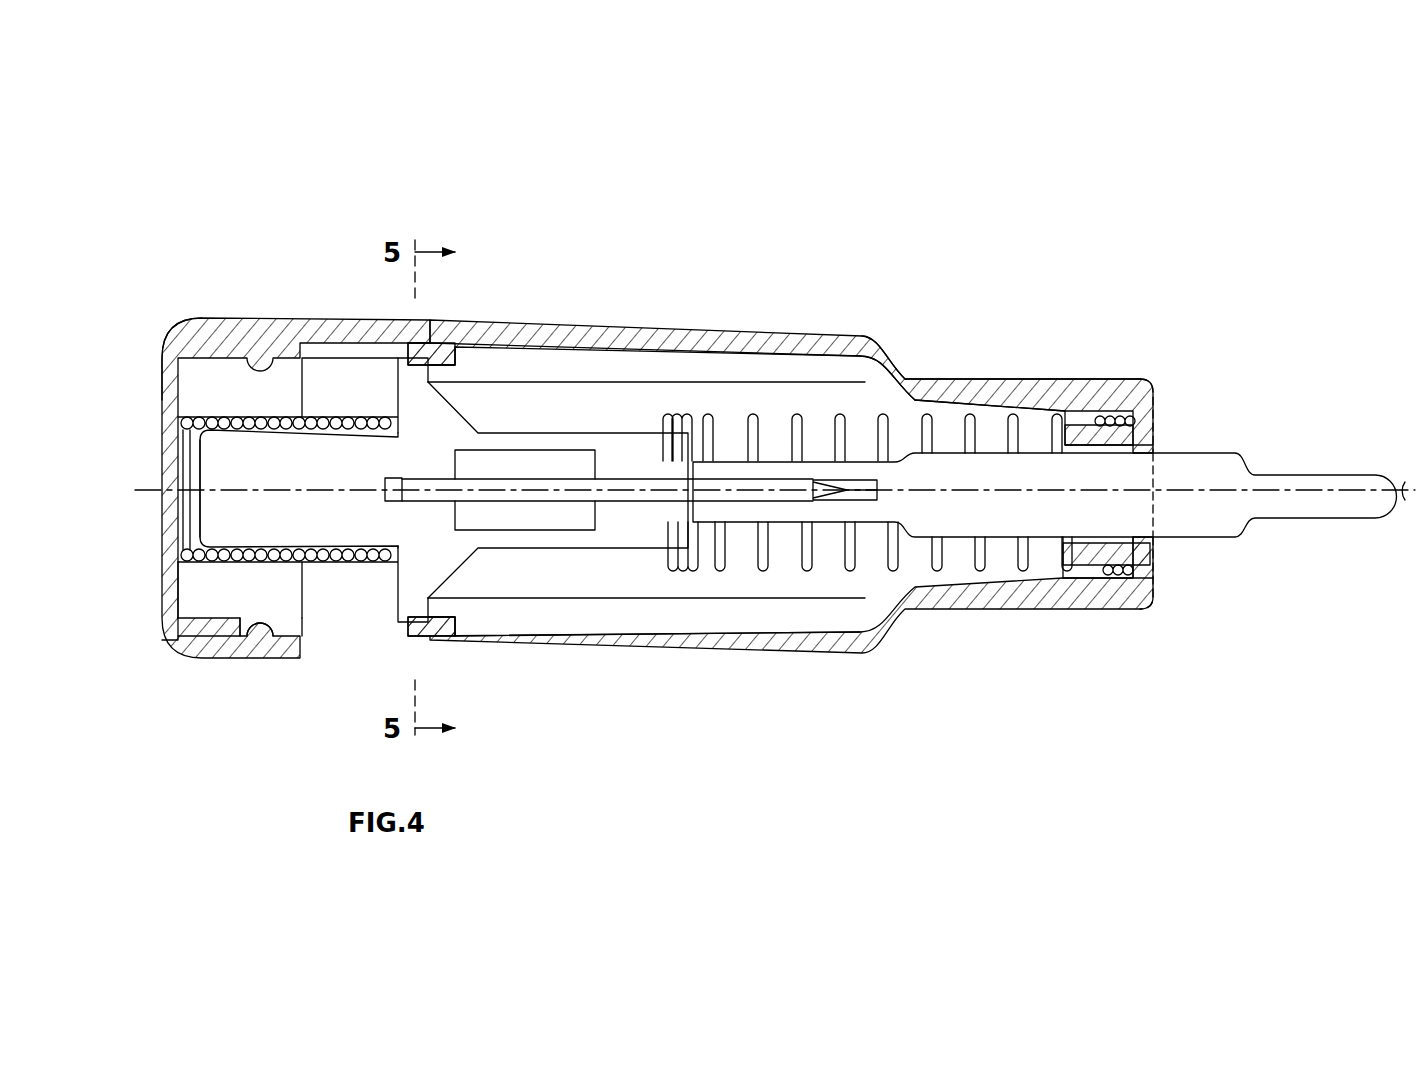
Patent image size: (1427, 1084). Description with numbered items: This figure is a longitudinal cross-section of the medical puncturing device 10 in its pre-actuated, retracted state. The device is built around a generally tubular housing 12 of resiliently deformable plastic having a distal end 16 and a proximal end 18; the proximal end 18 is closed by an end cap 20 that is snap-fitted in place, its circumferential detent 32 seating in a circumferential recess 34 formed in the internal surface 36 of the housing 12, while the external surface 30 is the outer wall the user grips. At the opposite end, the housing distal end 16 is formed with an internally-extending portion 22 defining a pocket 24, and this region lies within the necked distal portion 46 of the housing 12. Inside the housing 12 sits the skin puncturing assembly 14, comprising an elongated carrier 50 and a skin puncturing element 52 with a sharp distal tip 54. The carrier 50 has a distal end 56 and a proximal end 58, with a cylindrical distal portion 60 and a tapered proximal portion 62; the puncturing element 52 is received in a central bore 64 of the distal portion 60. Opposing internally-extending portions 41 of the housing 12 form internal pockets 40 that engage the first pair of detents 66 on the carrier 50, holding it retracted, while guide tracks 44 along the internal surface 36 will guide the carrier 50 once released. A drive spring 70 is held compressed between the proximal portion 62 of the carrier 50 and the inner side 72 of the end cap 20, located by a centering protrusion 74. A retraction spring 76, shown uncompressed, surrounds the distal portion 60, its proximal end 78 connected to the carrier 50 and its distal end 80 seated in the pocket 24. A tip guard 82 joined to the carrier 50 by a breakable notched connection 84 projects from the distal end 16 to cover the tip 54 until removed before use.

The medical puncturing device 10 is at (223, 267).
The housing 12 is at (730, 325).
The skin puncturing assembly 14 is at (638, 390).
The distal end 16 is at (1160, 378).
The proximal end 18 is at (237, 317).
The end cap 20 is at (178, 338).
The internally-extending portion 22 is at (1092, 550).
The pocket 24 is at (1072, 413).
The external surface 30 is at (850, 330).
The circumferential detent 32 is at (278, 630).
The circumferential recess 34 is at (250, 628).
The internal surface 36 is at (347, 350).
The internal pockets 40 is at (420, 333).
The internally-extending portions 41 is at (527, 333).
The guide tracks 44 is at (777, 367).
The distal portion 46 is at (947, 372).
The carrier member 50 is at (547, 433).
The skin puncturing element 52 is at (630, 493).
The sharp distal tip 54 is at (847, 495).
The distal end 56 is at (693, 440).
The proximal end 58 is at (213, 460).
The distal portion 60 is at (633, 445).
The proximal portion 62 is at (289, 489).
The central bore 64 is at (392, 483).
The first pair of detents 66 is at (407, 384).
The drive spring 70 is at (178, 567).
The inner side 72 is at (177, 613).
The centering protrusion 74 is at (180, 472).
The retraction spring 76 is at (938, 570).
The proximal end 78 is at (677, 577).
The distal end 80 is at (1140, 575).
The tip guard 82 is at (1247, 528).
The notched connection 84 is at (707, 523).